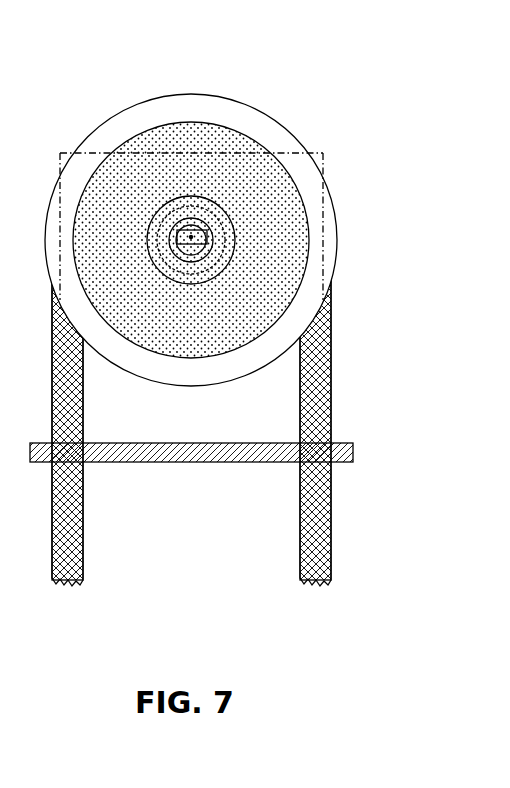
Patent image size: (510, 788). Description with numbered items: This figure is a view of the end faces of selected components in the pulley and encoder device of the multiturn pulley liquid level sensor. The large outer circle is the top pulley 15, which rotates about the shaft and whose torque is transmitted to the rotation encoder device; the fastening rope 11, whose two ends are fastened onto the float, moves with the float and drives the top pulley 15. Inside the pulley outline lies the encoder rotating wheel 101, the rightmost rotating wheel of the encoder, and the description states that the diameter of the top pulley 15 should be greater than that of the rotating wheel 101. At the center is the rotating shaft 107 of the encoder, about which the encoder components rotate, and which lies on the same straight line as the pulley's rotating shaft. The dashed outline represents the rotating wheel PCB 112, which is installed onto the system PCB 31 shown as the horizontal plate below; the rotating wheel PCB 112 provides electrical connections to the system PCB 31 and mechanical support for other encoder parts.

The fastening rope 11 is at (300, 553).
The top pulley 15 is at (183, 93).
The system PCB 31 is at (220, 462).
The rotating wheel 101 is at (273, 157).
The rotating shaft 107 is at (191, 240).
The rotating wheel PCB 112 is at (323, 150).